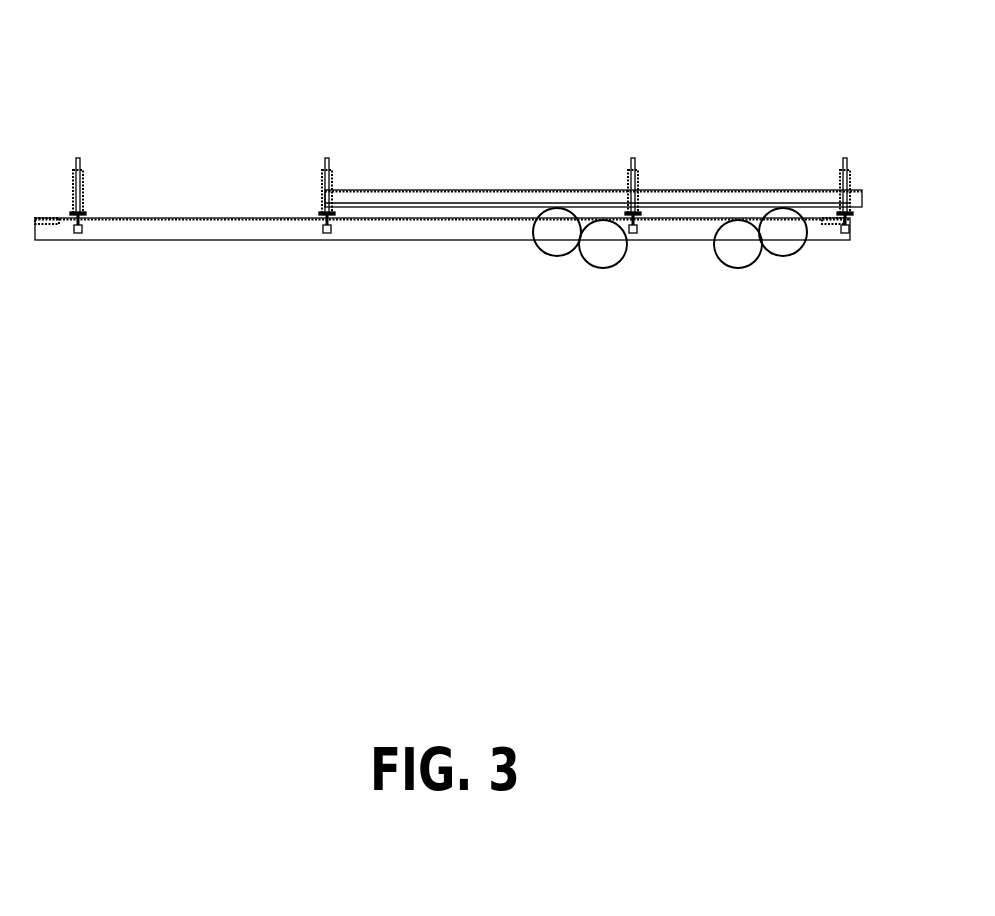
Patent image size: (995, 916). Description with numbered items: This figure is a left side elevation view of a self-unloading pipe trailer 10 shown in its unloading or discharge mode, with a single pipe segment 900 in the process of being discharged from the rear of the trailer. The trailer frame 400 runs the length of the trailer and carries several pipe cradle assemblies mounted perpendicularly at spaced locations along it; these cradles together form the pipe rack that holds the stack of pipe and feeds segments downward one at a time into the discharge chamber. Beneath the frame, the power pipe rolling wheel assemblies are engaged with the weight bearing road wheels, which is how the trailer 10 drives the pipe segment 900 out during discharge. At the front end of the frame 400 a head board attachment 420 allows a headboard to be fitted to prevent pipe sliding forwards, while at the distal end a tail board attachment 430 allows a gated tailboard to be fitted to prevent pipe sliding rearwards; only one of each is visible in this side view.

The self-unloading pipe trailer 10 is at (668, 677).
The trailer frame 400 is at (264, 257).
The head board attachment 420 is at (46, 224).
The tail board attachment 430 is at (827, 224).
The pipe segment 900 is at (455, 188).